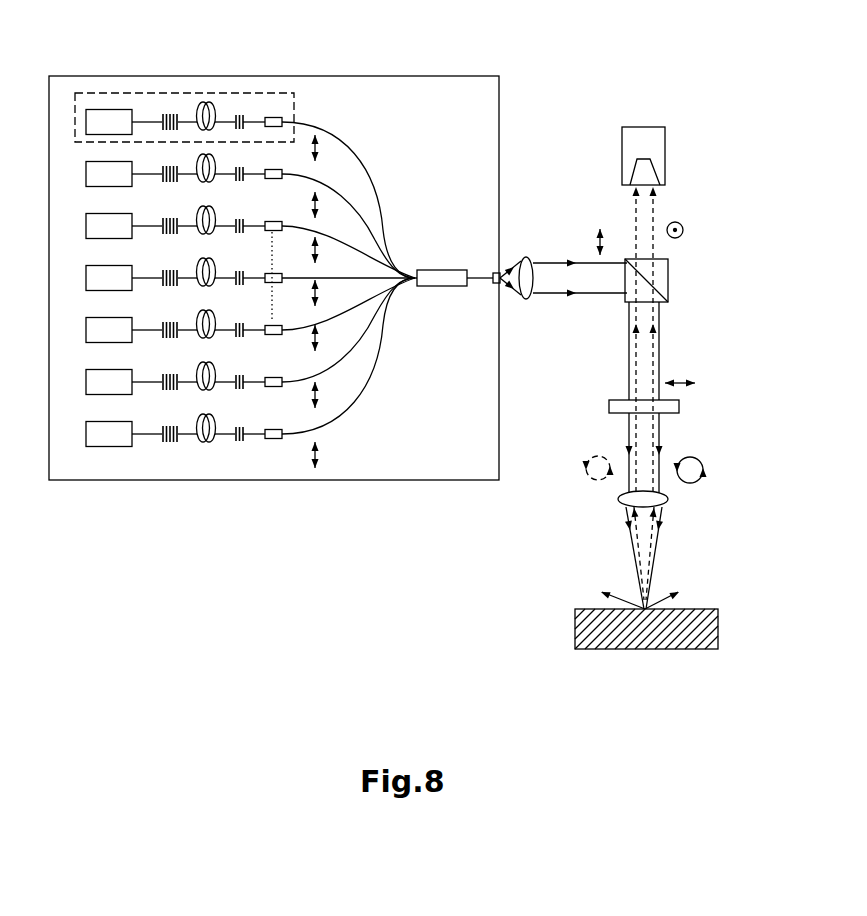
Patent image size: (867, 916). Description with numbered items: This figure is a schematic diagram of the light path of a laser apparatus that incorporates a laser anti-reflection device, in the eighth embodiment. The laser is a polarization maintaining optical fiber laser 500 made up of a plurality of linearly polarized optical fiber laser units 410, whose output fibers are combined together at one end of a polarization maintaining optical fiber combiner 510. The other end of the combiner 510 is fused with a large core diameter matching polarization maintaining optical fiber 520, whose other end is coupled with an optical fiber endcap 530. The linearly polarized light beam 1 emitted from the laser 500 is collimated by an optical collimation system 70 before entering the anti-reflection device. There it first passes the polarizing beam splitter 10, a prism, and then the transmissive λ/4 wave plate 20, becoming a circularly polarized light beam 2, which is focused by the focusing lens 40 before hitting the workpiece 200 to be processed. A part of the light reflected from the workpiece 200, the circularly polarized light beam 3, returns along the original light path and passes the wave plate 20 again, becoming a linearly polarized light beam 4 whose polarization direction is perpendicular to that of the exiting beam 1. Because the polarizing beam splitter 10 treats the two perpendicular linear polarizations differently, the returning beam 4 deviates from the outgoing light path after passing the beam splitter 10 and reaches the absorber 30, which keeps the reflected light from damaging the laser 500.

The polarization maintaining optical fiber laser 500 is at (385, 76).
The linearly polarized optical fiber laser unit 410 is at (152, 95).
The polarization maintaining optical fiber combiner 510 is at (433, 286).
The large core diameter matching polarization maintaining optical fiber 520 is at (478, 286).
The optical fiber endcap 530 is at (494, 273).
The optical collimation system 70 is at (526, 257).
The linearly polarized light beam 1 is at (588, 294).
The polarizing beam splitter 10 is at (668, 273).
The absorber 30 is at (646, 133).
The linearly polarized light beam 4 is at (653, 343).
The λ/4 wave plate 20 is at (679, 407).
The circularly polarized light beam 3 is at (630, 437).
The circularly polarized light beam 2 is at (662, 437).
The focusing lens 40 is at (662, 506).
The workpiece 200 is at (660, 651).